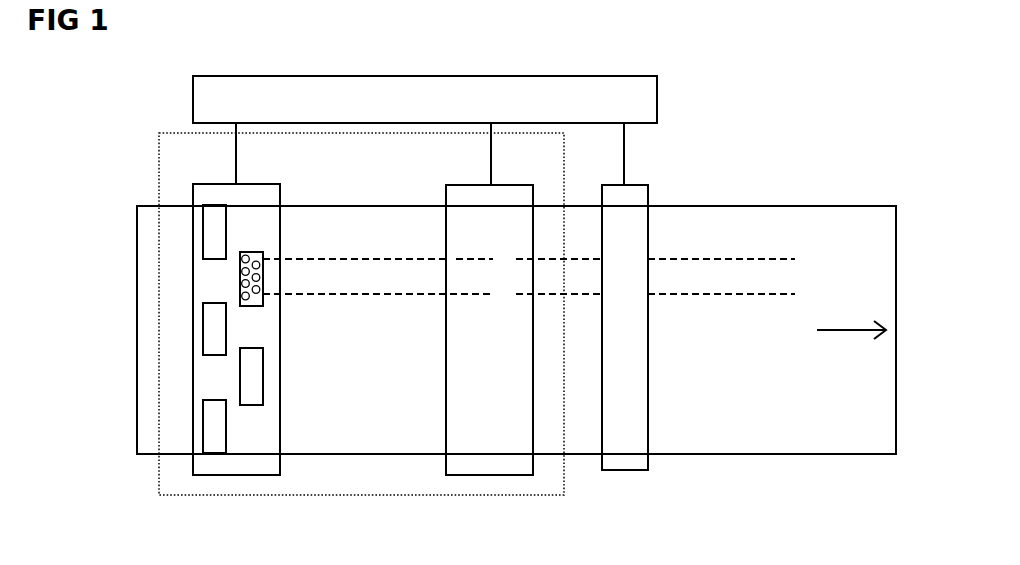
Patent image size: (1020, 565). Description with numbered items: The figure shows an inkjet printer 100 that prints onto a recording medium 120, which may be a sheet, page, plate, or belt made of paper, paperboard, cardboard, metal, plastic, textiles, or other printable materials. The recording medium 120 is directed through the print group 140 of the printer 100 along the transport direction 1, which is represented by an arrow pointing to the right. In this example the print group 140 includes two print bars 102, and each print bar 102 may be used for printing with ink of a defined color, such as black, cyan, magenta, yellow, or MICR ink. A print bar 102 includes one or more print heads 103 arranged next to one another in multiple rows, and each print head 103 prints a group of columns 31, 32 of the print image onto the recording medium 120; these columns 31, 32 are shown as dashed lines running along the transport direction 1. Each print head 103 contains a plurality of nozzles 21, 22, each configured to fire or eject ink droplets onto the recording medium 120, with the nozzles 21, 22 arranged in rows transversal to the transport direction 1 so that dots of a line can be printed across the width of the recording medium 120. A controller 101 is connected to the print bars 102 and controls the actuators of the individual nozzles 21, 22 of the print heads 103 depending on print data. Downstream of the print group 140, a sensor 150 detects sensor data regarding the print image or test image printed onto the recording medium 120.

The transport direction 1 is at (850, 333).
The printer 100 is at (133, 118).
The controller 101 is at (657, 101).
The print bar 102 is at (264, 184).
The print head 103 is at (210, 233).
The recording medium 120 is at (857, 206).
The print group 140 is at (159, 157).
The sensor 150 is at (648, 196).
The nozzle 21 is at (252, 253).
The nozzle 22 is at (242, 297).
The column 31 is at (347, 257).
The column 32 is at (328, 297).